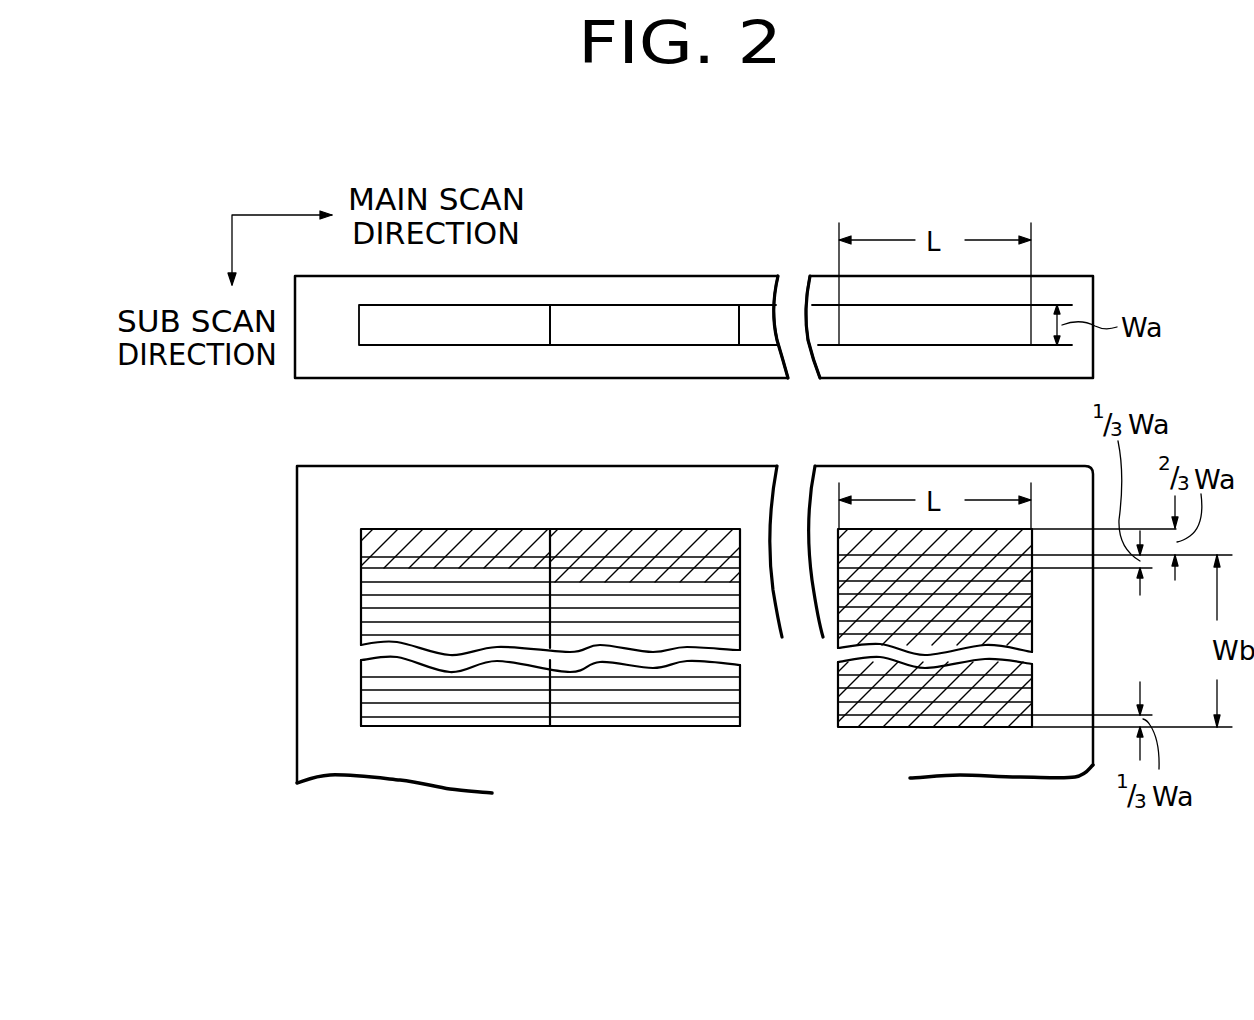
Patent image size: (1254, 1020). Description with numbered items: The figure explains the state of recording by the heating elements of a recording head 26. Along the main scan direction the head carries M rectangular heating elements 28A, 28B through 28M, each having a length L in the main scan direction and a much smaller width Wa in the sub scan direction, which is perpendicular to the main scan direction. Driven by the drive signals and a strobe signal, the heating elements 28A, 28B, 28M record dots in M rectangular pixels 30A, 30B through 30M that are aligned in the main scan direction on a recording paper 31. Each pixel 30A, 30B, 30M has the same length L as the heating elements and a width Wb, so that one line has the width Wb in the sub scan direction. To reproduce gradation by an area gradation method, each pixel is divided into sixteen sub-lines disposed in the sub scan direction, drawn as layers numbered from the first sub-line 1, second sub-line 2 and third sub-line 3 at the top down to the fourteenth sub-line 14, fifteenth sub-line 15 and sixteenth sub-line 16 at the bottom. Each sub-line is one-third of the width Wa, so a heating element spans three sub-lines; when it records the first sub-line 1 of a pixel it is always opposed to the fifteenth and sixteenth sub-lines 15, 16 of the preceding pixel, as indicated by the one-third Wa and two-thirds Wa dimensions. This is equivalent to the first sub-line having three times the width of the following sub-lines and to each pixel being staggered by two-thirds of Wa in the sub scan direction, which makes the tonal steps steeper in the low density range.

The first sub-line 1 is at (360, 563).
The second sub-line 2 is at (360, 577).
The third sub-line 3 is at (360, 592).
The fourteenth sub-line 14 is at (360, 698).
The fifteenth sub-line 15 is at (360, 709).
The sixteenth sub-line 16 is at (360, 722).
The recording head 26 is at (694, 245).
The heating element 28A is at (470, 333).
The heating element 28B is at (673, 333).
The heating element 28M is at (947, 333).
The pixel 30A is at (507, 727).
The pixel 30B is at (690, 727).
The pixel 30M is at (893, 727).
The recording paper 31 is at (365, 770).